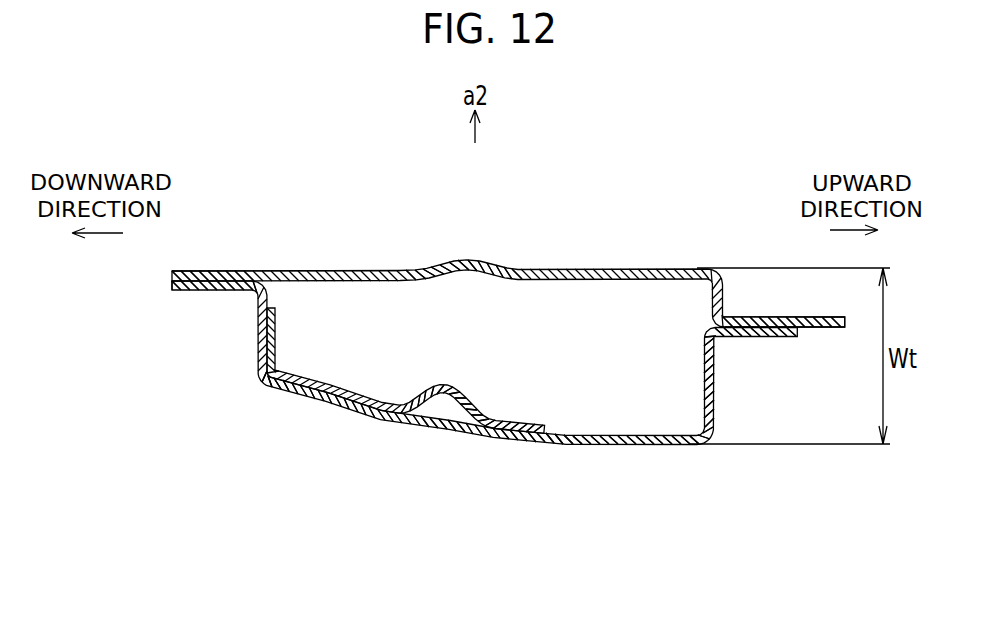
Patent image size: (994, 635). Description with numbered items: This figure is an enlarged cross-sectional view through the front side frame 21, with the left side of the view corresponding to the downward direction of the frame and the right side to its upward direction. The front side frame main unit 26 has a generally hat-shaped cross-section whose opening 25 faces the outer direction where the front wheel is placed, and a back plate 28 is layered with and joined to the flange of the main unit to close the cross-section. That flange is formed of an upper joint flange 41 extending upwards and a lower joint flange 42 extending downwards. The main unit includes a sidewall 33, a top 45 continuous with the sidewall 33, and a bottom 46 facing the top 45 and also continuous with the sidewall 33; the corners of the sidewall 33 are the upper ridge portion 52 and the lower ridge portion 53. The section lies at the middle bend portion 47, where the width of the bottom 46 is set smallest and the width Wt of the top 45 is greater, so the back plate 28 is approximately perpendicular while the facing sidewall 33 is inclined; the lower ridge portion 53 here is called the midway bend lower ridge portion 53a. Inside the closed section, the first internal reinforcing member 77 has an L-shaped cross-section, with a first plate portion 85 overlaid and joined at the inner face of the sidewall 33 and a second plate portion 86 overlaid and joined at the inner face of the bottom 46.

The front side frame 21 is at (247, 146).
The opening 25 is at (517, 297).
The front side frame main unit 26 is at (408, 425).
The back plate 28 is at (338, 270).
The sidewall 33 is at (595, 447).
The upper joint flange 41 is at (783, 337).
The lower joint flange 42 is at (207, 327).
The top 45 is at (715, 380).
The bottom 46 is at (257, 330).
The middle bend portion 47 is at (198, 292).
The upper ridge portion 52 is at (717, 432).
The lower ridge portion 53 is at (265, 387).
The midway bend lower ridge portion 53a is at (276, 422).
The first internal reinforcing member 77 is at (538, 402).
The first plate portion 85 is at (498, 420).
The second plate portion 86 is at (277, 340).